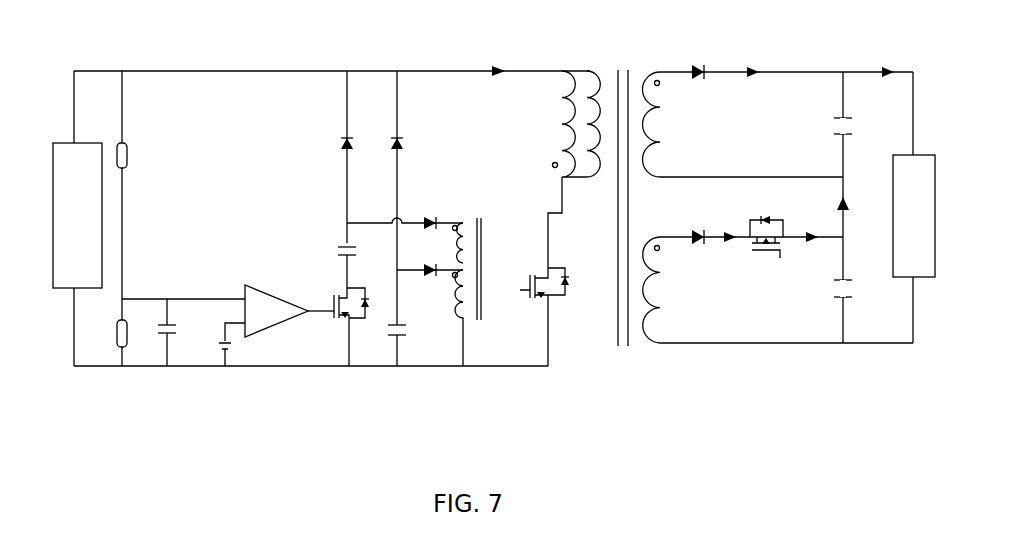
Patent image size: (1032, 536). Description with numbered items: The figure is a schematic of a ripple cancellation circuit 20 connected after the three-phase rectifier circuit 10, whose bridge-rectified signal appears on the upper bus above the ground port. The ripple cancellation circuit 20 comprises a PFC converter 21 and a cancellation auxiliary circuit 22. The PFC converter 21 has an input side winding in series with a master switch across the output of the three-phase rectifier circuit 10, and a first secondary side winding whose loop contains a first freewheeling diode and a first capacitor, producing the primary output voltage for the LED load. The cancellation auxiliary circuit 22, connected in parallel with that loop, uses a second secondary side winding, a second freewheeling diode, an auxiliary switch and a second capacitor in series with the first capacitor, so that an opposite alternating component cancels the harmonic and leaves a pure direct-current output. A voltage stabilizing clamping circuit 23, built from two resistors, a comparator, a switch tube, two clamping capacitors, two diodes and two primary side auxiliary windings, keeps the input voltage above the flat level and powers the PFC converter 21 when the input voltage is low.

The three-phase rectifier circuit 10 is at (46, 185).
The ripple cancellation circuit 20 is at (250, 62).
The PFC converter 21 is at (593, 58).
The cancellation auxiliary circuit 22 is at (729, 362).
The voltage stabilizing clamping circuit 23 is at (328, 382).